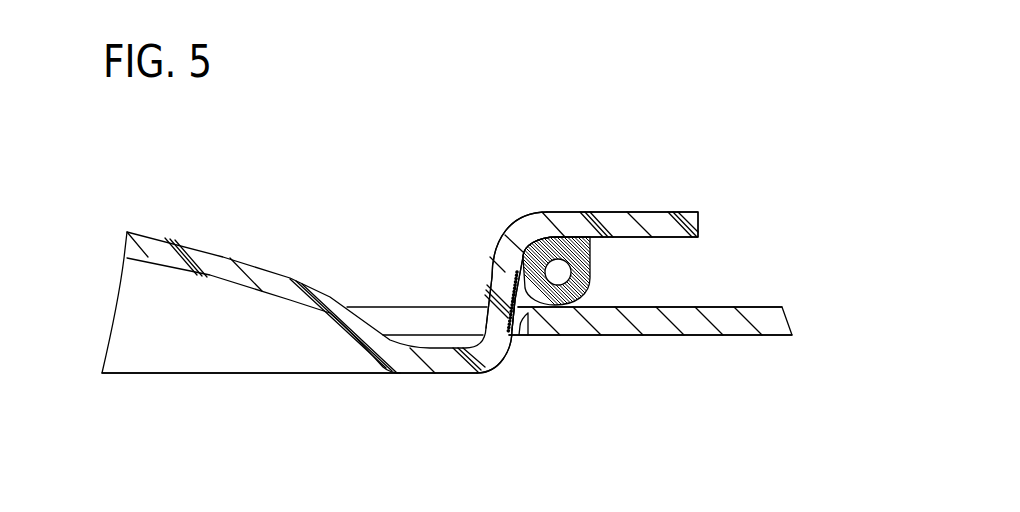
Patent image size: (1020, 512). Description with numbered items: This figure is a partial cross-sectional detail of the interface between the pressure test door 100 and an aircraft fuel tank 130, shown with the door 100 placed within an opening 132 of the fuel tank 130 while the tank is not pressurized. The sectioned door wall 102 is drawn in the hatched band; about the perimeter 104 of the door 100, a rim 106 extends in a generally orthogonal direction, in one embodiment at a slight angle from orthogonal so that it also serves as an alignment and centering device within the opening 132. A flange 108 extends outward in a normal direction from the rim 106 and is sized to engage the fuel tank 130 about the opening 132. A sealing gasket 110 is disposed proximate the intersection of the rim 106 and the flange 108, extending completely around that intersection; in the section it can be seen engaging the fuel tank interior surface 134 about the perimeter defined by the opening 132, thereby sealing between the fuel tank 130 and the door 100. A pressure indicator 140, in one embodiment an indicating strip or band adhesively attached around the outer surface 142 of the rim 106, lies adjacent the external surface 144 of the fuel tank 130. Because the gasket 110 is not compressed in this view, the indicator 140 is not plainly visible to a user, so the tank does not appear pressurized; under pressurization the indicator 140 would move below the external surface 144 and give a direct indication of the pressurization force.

The door 100 is at (384, 175).
The first panel 102 is at (258, 266).
The perimeter 104 is at (442, 373).
The rim 106 is at (490, 287).
The flange 108 is at (653, 212).
The sealing gasket 110 is at (591, 262).
The aircraft fuel tank 130 is at (785, 310).
The opening 132 is at (525, 338).
The fuel tank interior surface 134 is at (636, 307).
The pressure indicator 140 is at (512, 340).
The outer surface 142 is at (507, 344).
The external surface 144 is at (740, 337).